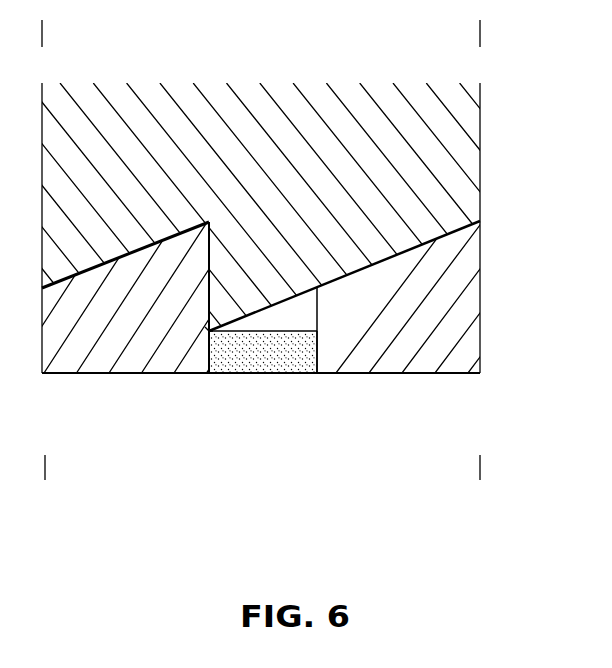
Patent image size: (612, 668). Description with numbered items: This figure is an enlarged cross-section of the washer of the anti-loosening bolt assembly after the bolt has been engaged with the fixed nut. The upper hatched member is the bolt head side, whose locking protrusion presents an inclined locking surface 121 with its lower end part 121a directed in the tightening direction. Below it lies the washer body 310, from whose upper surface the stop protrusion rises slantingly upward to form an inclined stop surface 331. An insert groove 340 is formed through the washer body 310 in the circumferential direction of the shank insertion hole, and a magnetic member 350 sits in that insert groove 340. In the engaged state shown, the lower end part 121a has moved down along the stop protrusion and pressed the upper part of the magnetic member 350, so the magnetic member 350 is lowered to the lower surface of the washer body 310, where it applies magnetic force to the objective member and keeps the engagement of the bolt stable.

The inclined locking surface 121 is at (112, 262).
The lower end part of the inclined locking surface 121a is at (207, 331).
The inclined stop surface 331 is at (462, 255).
The insert groove 340 is at (280, 316).
The magnetic member 350 is at (298, 357).
The washer body 310 is at (398, 358).